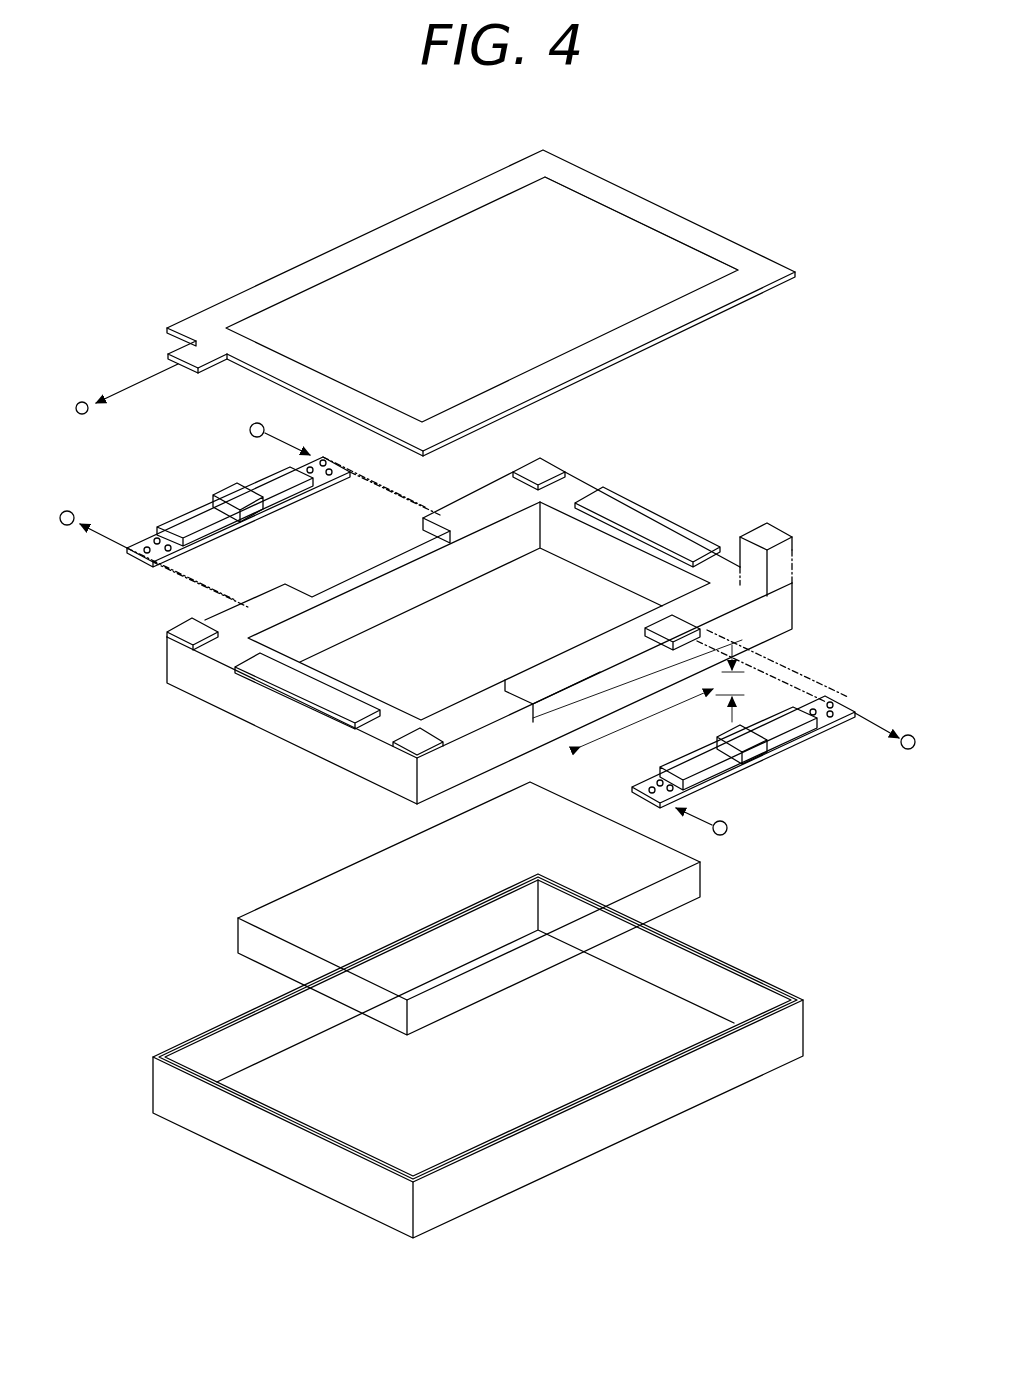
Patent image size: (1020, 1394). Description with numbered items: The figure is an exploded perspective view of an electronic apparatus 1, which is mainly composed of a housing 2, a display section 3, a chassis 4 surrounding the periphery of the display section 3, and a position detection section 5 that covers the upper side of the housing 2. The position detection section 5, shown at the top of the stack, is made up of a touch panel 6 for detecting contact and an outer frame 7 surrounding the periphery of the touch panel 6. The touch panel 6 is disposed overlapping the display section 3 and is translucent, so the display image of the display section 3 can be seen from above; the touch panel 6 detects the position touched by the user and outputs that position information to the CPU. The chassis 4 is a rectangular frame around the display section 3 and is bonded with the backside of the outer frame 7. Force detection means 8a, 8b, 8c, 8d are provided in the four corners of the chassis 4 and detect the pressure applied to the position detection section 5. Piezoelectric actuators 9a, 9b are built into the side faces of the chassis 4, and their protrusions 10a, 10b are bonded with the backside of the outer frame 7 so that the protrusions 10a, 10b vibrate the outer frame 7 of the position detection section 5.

The electronic apparatus 1 is at (322, 198).
The housing 2 is at (788, 1038).
The display section 3 is at (332, 888).
The chassis 4 is at (798, 396).
The position detection section 5 is at (730, 230).
The touch panel 6 is at (578, 226).
The outer frame 7 is at (672, 225).
The force detection means 8a is at (772, 530).
The force detection means 8b is at (547, 470).
The force detection means 8c is at (398, 746).
The force detection means 8d is at (190, 628).
The piezoelectric actuator 9a is at (804, 758).
The piezoelectric actuator 9b is at (174, 501).
The protrusion 10a is at (757, 744).
The protrusion 10b is at (235, 493).